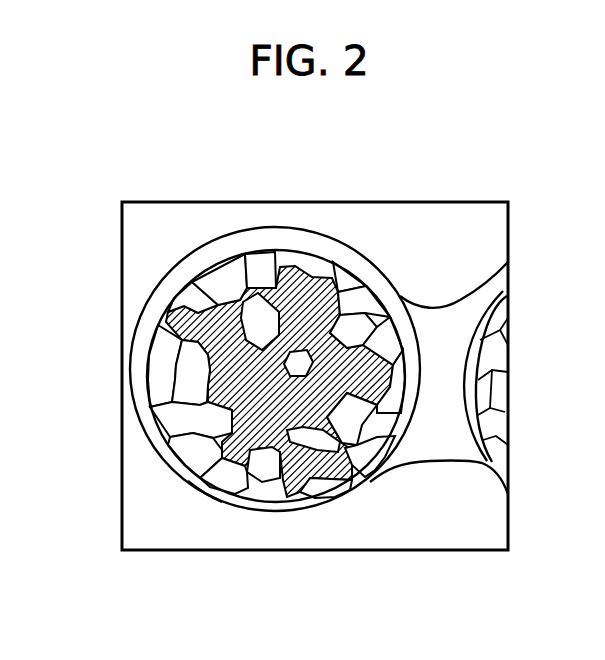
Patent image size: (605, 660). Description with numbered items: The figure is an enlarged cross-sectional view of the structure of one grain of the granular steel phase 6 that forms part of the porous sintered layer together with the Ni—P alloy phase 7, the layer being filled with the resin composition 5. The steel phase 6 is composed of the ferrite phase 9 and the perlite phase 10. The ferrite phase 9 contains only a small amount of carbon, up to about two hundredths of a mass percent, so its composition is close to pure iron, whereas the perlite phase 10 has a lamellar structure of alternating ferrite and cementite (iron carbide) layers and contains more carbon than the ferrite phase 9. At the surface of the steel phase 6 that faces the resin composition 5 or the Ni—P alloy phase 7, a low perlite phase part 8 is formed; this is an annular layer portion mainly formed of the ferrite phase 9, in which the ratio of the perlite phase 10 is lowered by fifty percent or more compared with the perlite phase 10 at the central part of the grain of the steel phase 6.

The resin composition 5 is at (409, 240).
The granular steel phase 6 is at (203, 492).
The Ni—P alloy phase 7 is at (233, 242).
The low perlite phase part 8 is at (263, 497).
The ferrite phase 9 is at (363, 449).
The perlite phase 10 is at (305, 472).